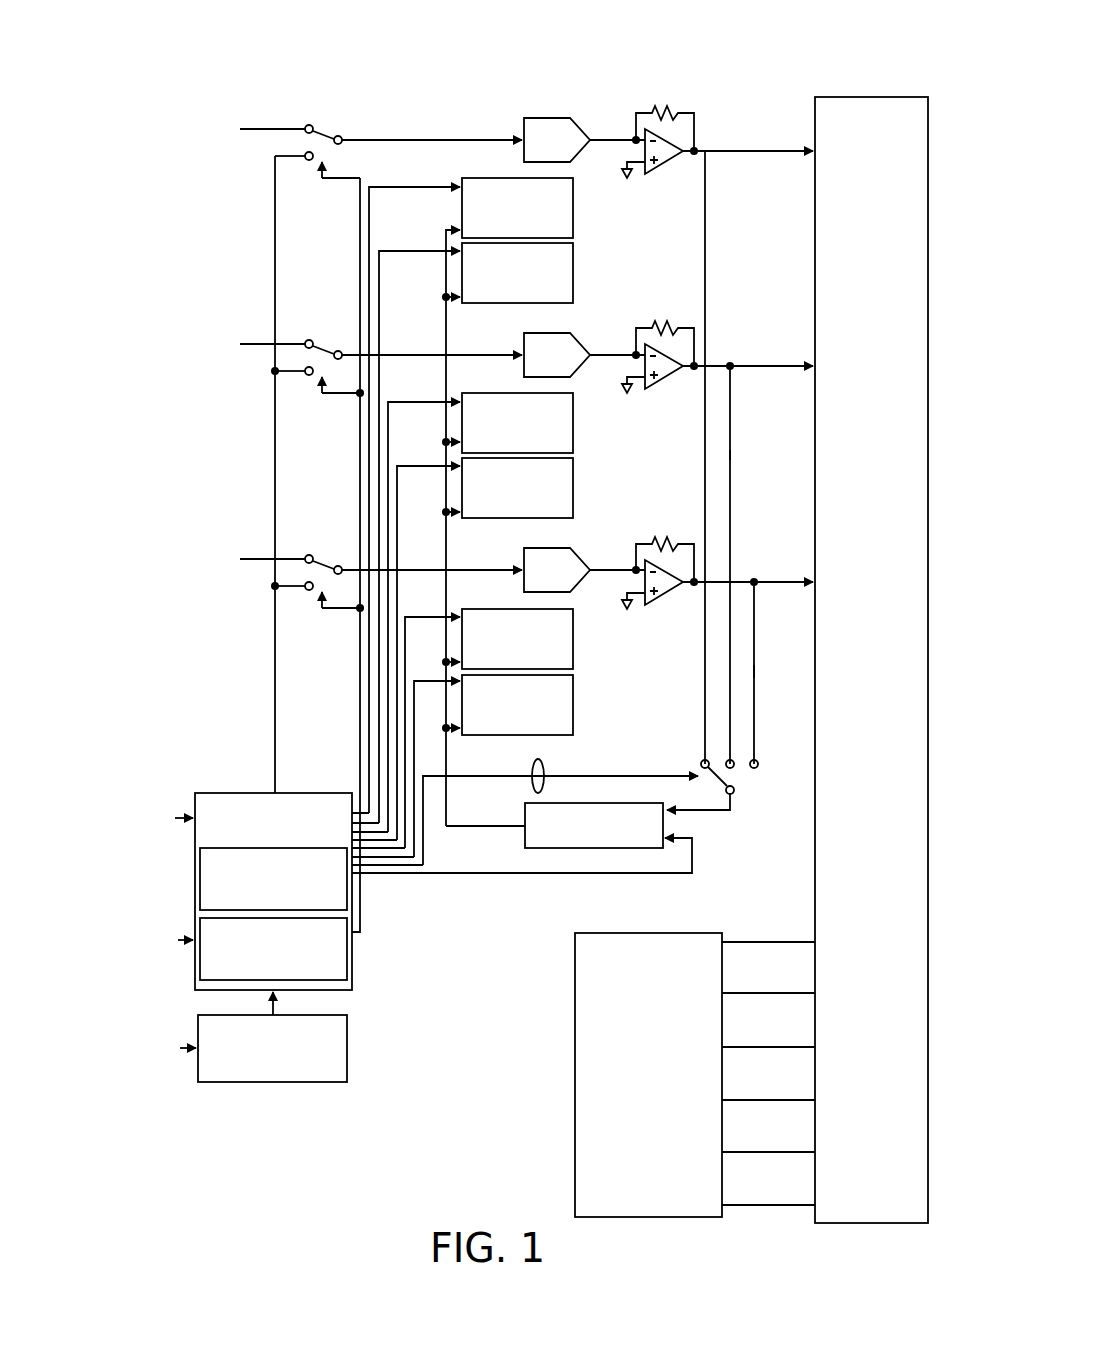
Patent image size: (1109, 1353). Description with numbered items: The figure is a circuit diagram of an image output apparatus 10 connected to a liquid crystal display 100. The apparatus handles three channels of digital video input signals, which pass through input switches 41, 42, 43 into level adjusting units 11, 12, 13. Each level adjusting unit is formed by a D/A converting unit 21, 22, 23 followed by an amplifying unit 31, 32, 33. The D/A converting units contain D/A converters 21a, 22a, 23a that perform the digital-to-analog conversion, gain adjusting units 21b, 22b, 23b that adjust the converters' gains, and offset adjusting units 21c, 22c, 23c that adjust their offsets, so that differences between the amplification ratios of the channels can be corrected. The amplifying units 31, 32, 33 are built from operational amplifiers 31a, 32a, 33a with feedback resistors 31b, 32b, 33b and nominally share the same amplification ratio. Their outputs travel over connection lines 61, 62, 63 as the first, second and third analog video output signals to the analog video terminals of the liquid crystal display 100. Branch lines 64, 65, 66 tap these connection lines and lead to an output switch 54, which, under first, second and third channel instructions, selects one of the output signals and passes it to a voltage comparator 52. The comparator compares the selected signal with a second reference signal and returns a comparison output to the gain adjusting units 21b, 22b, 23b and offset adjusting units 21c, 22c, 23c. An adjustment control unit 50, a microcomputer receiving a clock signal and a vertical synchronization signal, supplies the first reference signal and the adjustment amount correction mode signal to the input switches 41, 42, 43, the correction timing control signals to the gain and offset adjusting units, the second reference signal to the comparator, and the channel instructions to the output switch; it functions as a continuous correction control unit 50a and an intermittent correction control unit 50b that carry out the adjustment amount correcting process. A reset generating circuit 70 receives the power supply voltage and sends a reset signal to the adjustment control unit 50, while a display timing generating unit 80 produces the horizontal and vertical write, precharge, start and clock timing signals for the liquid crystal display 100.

The image output apparatus 10 is at (723, 71).
The liquid crystal display 100 is at (868, 97).
The first level adjusting unit 11 is at (652, 50).
The second level adjusting unit 12 is at (652, 265).
The third level adjusting unit 13 is at (652, 480).
The first D/A converting unit 21 is at (588, 114).
The second D/A converting unit 22 is at (588, 329).
The third D/A converting unit 23 is at (588, 544).
The D/A converter 21a is at (546, 118).
The gain adjusting unit 21b is at (498, 178).
The offset adjusting unit 21c is at (492, 303).
The D/A converter 22a is at (560, 333).
The gain adjusting unit 22b is at (498, 393).
The offset adjusting unit 22c is at (492, 518).
The D/A converter 23a is at (560, 548).
The gain adjusting unit 23b is at (498, 609).
The offset adjusting unit 23c is at (523, 735).
The first amplifying unit 31 is at (648, 98).
The second amplifying unit 32 is at (648, 313).
The third amplifying unit 33 is at (648, 529).
The operational amplifier 31a is at (658, 175).
The resistor 31b is at (673, 106).
The operational amplifier 32a is at (658, 390).
The resistor 32b is at (673, 321).
The operational amplifier 33a is at (658, 606).
The resistor 33b is at (673, 537).
The first input switch 41 is at (323, 134).
The second input switch 42 is at (323, 349).
The third input switch 43 is at (323, 564).
The adjustment control unit 50 is at (236, 872).
The continuous correction control unit 50a is at (195, 879).
The intermittent correction control unit 50b is at (195, 963).
The voltage comparator 52 is at (637, 804).
The output switch 54 is at (741, 779).
The first connection line 61 is at (718, 150).
The second connection line 62 is at (712, 365).
The third connection line 63 is at (733, 580).
The first branch line 64 is at (706, 245).
The second branch line 65 is at (731, 452).
The third branch line 66 is at (755, 672).
The reset generating circuit 70 is at (348, 1045).
The display timing generating unit 80 is at (575, 1063).